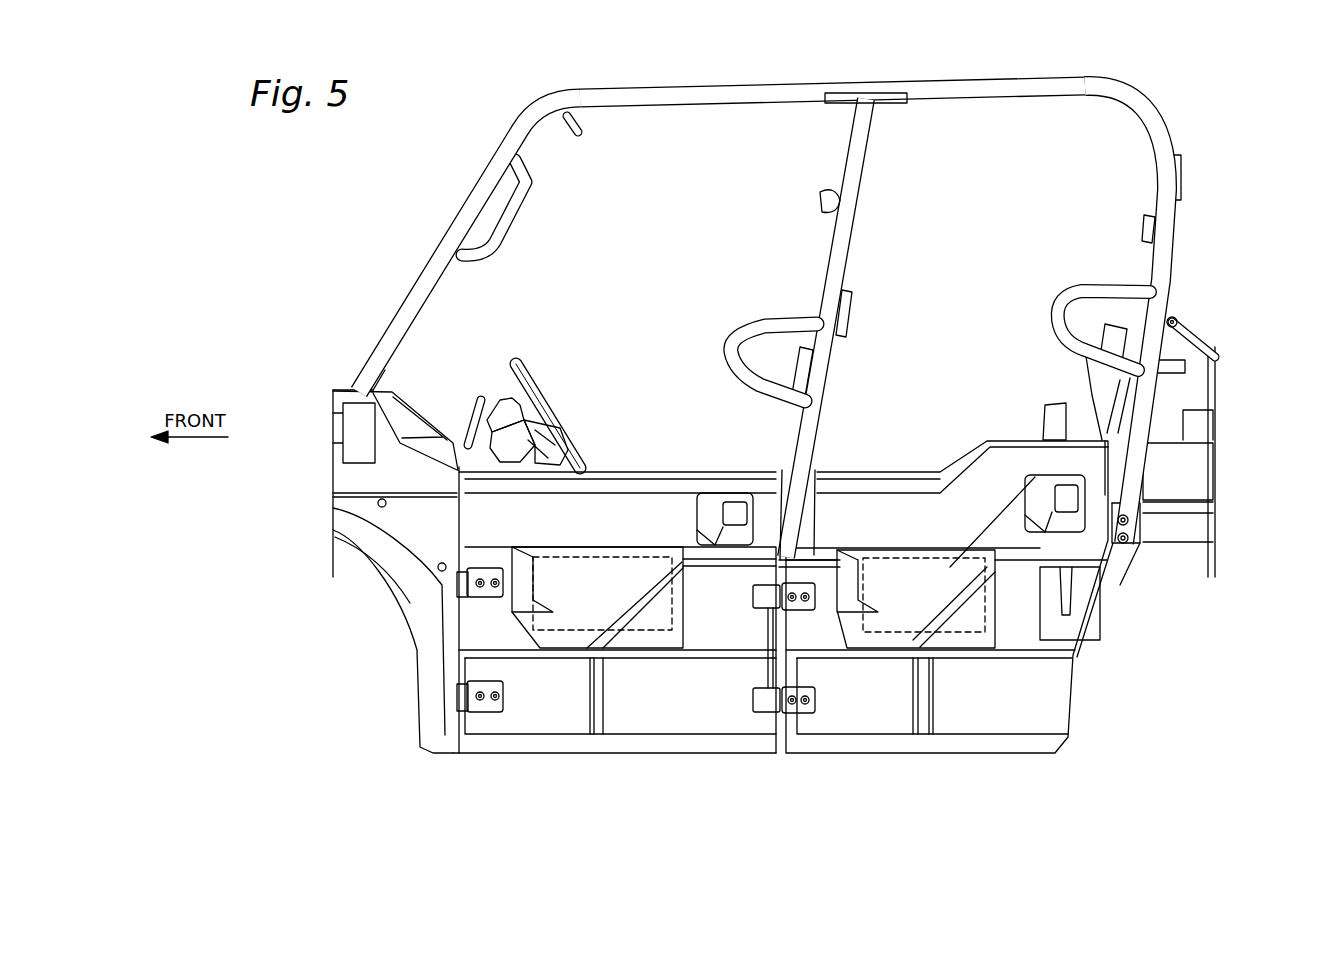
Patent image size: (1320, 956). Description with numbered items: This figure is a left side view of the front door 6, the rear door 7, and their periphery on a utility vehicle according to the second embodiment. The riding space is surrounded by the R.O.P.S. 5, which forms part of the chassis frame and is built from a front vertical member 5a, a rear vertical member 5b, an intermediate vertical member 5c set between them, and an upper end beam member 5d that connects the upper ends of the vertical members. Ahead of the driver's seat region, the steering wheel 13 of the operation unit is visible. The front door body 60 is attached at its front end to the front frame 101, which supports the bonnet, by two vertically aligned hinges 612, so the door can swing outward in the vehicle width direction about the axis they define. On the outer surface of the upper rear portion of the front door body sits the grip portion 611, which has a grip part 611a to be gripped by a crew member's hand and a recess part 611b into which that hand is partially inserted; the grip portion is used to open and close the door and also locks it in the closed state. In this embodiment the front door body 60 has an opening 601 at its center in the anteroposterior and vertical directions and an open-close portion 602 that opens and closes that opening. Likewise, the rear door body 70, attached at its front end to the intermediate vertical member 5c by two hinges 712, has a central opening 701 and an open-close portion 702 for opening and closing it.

The R.O.P.S. 5 is at (1200, 136).
The front vertical member 5a is at (470, 220).
The rear vertical member 5b is at (1175, 226).
The intermediate vertical member 5c is at (850, 158).
The upper end beam member 5d is at (697, 93).
The front door 6 is at (473, 760).
The rear door 7 is at (1033, 762).
The steering wheel 13 is at (504, 375).
The front door body 60 is at (568, 715).
The opening 601 is at (651, 632).
The open-close portion 602 is at (566, 636).
The grip portion 611 is at (709, 524).
The grip part 611a is at (740, 536).
The recess part 611b is at (752, 531).
The hinge 612 is at (458, 588).
The rear door body 70 is at (1013, 713).
The opening 701 is at (958, 632).
The open-close portion 702 is at (885, 648).
The hinge 712 is at (764, 708).
The front frame 101 is at (455, 510).